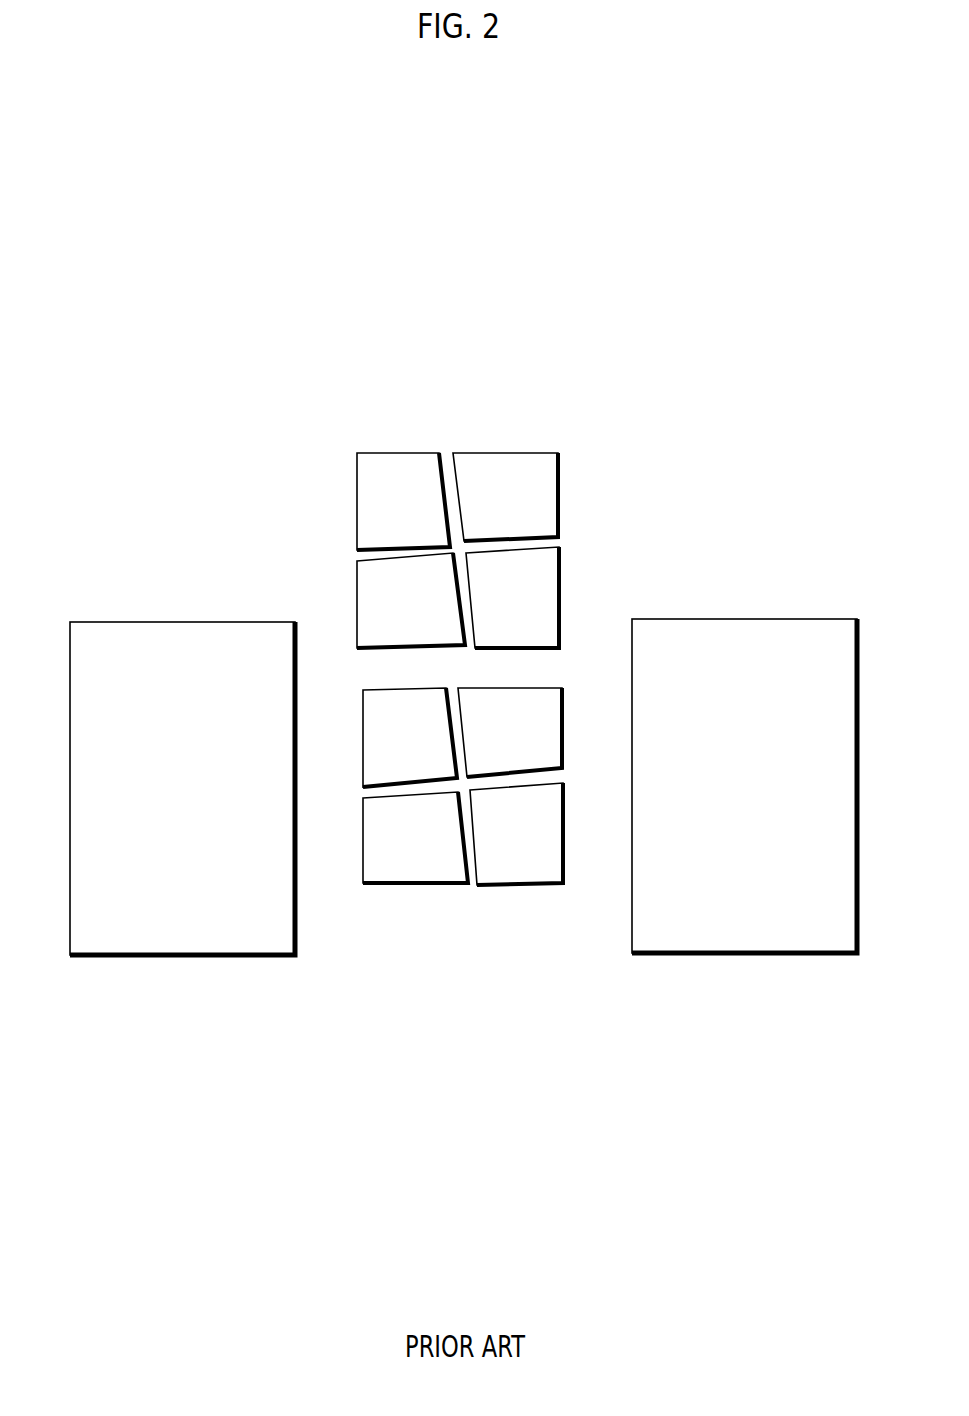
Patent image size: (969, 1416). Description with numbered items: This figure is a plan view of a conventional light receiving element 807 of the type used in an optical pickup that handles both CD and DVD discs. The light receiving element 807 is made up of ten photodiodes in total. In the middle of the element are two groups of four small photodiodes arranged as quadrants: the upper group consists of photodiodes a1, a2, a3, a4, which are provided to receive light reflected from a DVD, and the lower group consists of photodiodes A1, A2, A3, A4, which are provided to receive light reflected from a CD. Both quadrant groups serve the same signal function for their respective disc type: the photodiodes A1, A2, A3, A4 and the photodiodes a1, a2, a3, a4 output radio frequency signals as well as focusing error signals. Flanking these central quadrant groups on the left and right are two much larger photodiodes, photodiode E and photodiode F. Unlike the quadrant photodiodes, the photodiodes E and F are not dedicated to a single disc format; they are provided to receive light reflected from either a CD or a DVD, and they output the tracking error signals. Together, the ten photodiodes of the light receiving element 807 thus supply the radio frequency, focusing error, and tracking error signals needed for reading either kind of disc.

The light receiving element 807 is at (482, 282).
The photodiode E is at (182, 788).
The photodiode F is at (744, 786).
The photodiode a1 is at (411, 600).
The photodiode a2 is at (512, 597).
The photodiode a3 is at (505, 497).
The photodiode a4 is at (403, 501).
The photodiode A1 is at (415, 837).
The photodiode A2 is at (516, 834).
The photodiode A3 is at (510, 732).
The photodiode A4 is at (410, 737).